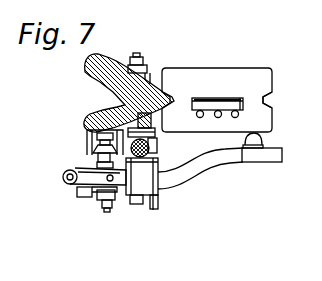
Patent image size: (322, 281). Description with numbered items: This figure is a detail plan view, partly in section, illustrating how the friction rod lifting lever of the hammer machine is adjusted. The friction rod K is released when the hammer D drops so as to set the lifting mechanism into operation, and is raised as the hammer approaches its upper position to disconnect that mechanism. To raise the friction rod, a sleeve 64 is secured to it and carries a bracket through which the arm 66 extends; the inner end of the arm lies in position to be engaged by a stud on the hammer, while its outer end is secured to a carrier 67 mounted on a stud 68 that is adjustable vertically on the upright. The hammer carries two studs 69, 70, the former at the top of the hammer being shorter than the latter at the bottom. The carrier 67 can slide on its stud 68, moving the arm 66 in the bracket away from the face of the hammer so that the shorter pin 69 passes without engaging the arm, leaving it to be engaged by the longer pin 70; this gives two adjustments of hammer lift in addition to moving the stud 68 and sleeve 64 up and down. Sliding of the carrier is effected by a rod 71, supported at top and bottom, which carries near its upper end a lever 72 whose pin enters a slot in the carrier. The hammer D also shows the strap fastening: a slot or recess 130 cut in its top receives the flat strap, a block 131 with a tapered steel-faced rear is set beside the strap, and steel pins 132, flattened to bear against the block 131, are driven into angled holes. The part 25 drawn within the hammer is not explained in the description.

The cam lever K is at (108, 112).
The housing / casing D is at (228, 75).
The carriage 25 is at (236, 101).
The carriage strip 131 is at (199, 98).
The rollers 132 is at (240, 116).
The housing notch 130 is at (263, 100).
The cam roller 64 is at (155, 148).
The connecting rod 66 is at (186, 181).
The bracket 67 is at (130, 196).
The nut 68 is at (143, 205).
The dome cap 69 is at (245, 136).
The support bar 70 is at (258, 150).
The pivot 71 is at (66, 184).
The lever 72 is at (78, 167).